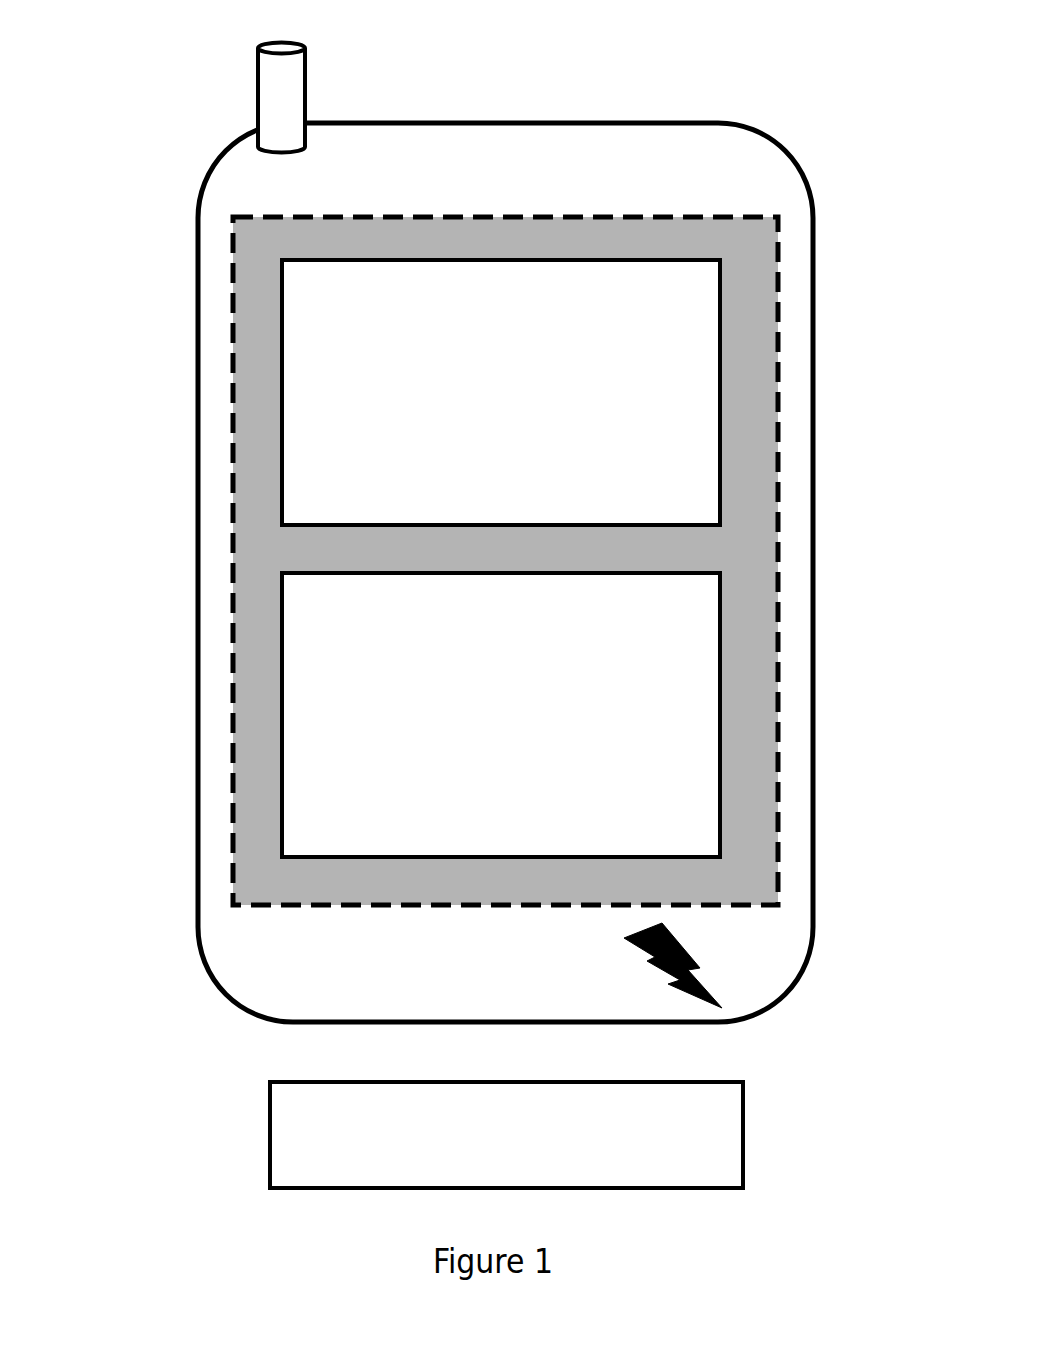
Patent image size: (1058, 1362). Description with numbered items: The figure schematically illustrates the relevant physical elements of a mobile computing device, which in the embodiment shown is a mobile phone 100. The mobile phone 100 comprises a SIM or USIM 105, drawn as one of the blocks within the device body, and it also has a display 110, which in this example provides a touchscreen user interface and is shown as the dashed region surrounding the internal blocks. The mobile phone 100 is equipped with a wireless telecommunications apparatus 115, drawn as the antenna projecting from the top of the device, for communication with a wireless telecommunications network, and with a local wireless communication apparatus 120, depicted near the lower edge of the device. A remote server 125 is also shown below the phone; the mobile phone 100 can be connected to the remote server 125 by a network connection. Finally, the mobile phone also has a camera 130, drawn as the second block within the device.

The mobile phone 100 is at (788, 81).
The SIM or USIM 105 is at (322, 327).
The display 110 is at (232, 490).
The wireless telecommunications apparatus 115 is at (281, 95).
The local wireless communication apparatus 120 is at (685, 945).
The remote server 125 is at (683, 1133).
The camera 130 is at (322, 750).